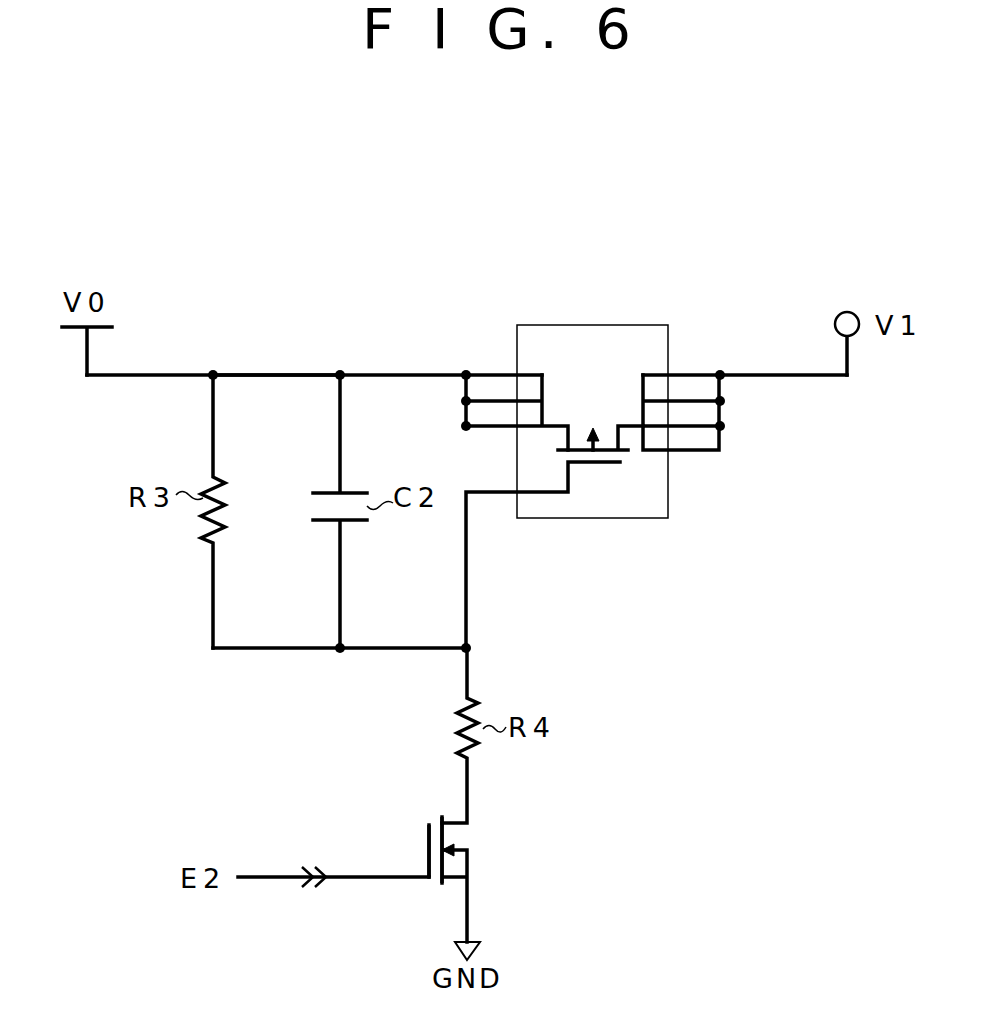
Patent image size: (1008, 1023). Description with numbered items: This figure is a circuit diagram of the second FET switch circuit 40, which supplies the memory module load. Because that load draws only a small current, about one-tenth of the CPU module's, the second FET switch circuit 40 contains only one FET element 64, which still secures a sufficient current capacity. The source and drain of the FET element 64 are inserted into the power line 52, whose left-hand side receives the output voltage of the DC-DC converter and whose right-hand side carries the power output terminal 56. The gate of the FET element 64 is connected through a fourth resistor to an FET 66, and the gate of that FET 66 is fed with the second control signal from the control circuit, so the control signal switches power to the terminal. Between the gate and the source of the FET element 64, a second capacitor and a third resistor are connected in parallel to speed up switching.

The second FET switch circuit 40 is at (472, 338).
The power line 52 is at (278, 375).
The power output terminal 56 is at (847, 312).
The FET element 64 is at (607, 325).
The FET 66 is at (463, 840).